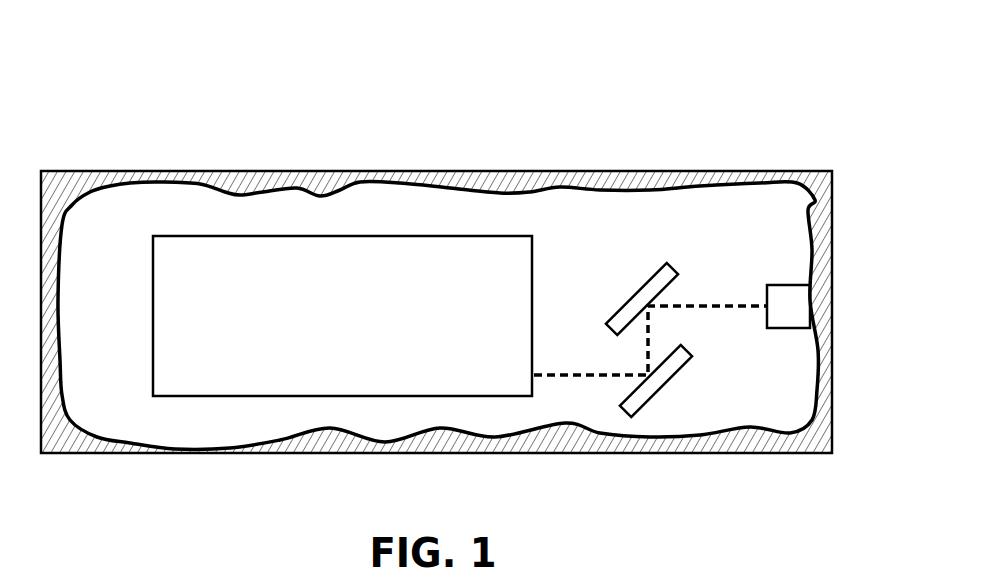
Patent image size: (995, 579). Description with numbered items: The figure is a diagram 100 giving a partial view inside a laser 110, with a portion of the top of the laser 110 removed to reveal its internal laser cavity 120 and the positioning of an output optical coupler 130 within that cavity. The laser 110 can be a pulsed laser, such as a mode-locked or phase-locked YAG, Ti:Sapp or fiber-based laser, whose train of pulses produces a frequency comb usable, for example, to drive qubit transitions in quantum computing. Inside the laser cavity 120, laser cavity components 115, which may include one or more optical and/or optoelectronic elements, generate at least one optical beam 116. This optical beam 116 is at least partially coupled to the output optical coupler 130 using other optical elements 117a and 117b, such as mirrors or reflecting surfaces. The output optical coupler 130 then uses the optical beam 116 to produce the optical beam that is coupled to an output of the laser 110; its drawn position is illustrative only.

The diagram 100 is at (658, 46).
The laser 110 is at (111, 170).
The laser cavity components 115 is at (323, 362).
The optical beam 116 is at (557, 372).
The optical element 117a is at (665, 388).
The optical element 117b is at (652, 278).
The laser cavity 120 is at (390, 200).
The output optical coupler 130 is at (778, 274).